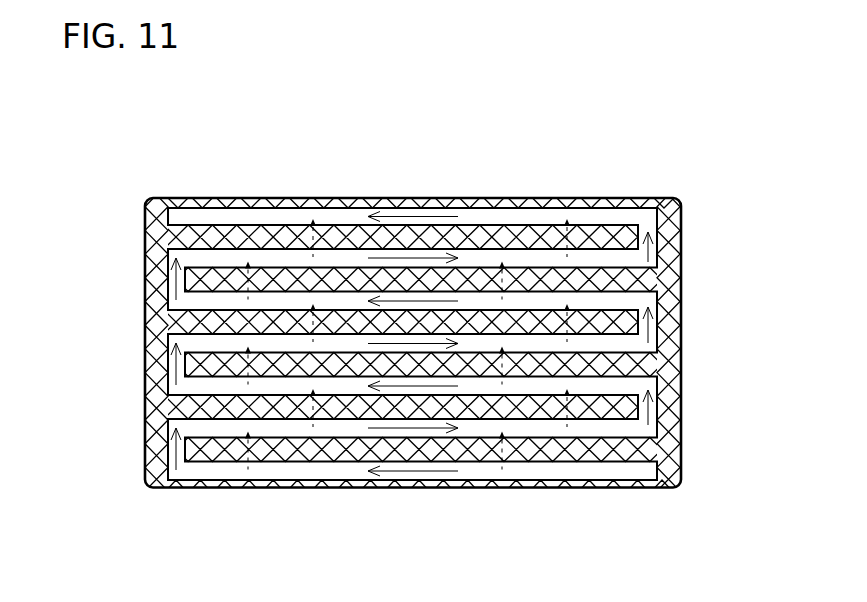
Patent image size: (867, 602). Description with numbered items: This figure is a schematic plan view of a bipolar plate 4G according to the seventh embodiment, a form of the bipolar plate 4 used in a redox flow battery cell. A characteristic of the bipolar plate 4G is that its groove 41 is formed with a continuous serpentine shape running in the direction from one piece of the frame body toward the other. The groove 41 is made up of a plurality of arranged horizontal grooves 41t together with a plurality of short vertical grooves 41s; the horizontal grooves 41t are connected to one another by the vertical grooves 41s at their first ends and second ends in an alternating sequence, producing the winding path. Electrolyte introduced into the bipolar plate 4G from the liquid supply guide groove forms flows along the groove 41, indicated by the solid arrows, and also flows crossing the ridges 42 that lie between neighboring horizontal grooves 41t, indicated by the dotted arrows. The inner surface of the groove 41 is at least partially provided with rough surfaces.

The bipolar plate 4 is at (412, 339).
The bipolar plate 4G is at (482, 127).
The groove 41 is at (412, 347).
The horizontal groove 41t is at (702, 273).
The vertical groove 41s is at (167, 456).
The ridge 42 is at (218, 272).